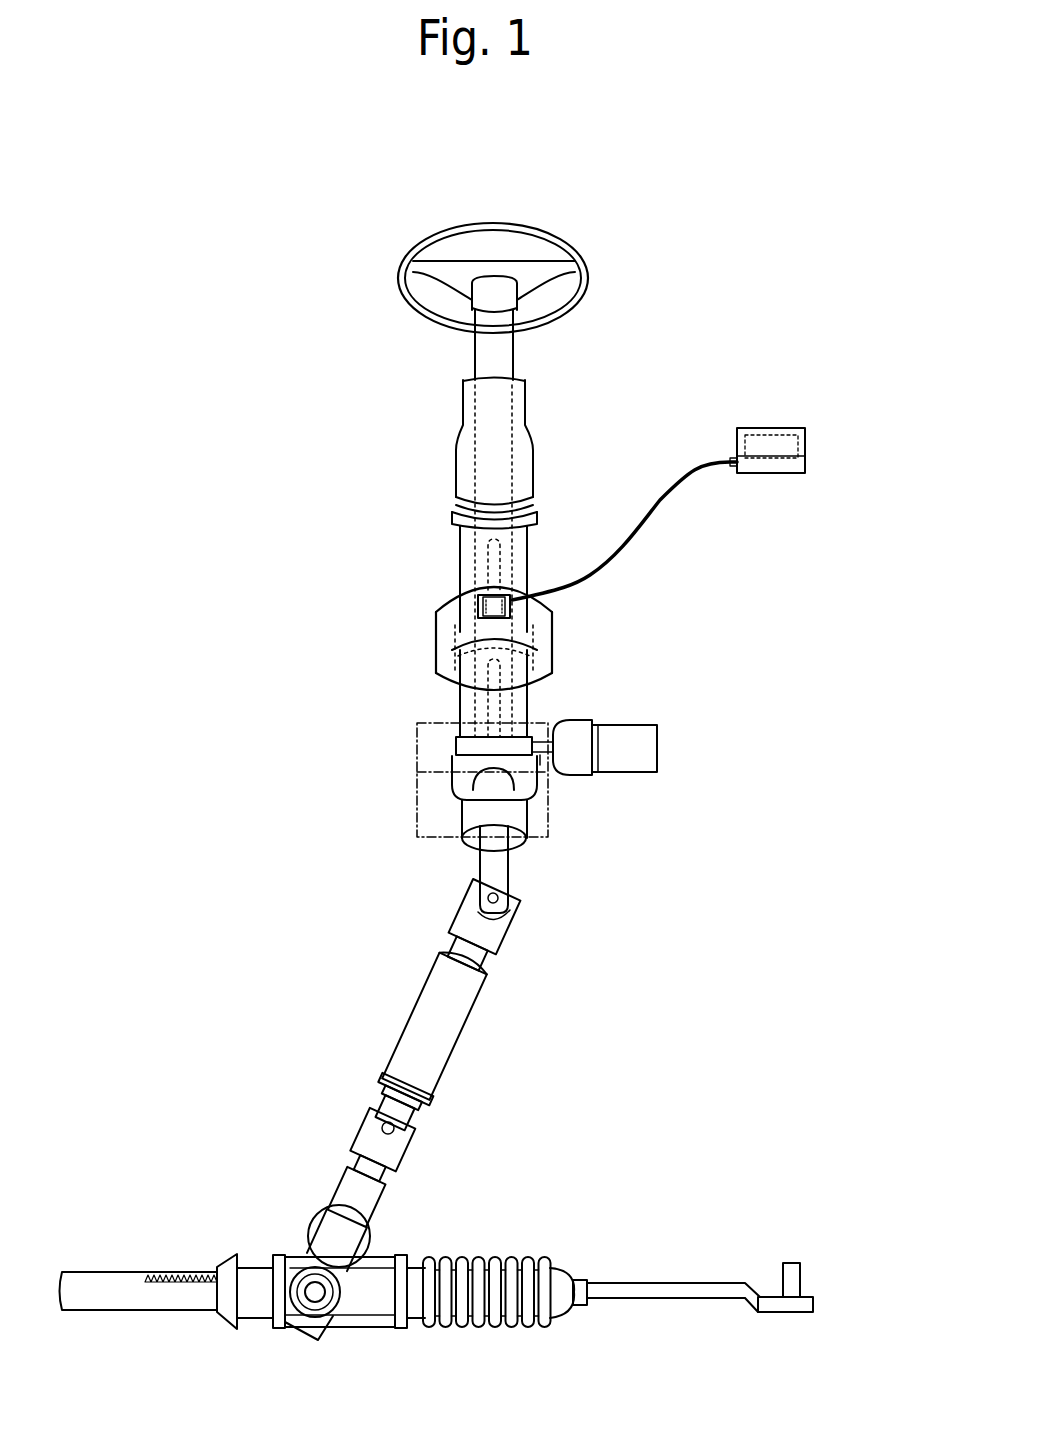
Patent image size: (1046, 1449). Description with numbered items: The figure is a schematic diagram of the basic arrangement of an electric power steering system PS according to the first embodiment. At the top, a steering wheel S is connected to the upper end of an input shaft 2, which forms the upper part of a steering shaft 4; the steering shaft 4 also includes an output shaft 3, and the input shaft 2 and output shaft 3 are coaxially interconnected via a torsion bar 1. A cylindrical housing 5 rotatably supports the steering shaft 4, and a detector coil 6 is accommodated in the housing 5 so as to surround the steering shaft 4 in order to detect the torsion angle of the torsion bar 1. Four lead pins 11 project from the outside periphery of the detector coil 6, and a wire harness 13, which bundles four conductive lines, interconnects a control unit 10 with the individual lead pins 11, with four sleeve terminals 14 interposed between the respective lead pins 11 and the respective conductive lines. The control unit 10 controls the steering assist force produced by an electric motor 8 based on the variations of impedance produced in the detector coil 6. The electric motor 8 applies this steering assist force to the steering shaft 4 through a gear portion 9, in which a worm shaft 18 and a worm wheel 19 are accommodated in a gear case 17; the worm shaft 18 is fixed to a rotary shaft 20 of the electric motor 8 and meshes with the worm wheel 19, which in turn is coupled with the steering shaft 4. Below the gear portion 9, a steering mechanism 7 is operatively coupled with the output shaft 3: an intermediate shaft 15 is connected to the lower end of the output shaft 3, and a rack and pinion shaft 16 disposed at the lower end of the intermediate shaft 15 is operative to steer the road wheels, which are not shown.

The electric power steering system PS is at (607, 200).
The steering wheel S is at (598, 272).
The torsion bar 1 is at (460, 557).
The input shaft 2 is at (474, 350).
The output shaft 3 is at (485, 885).
The steering shaft 4 is at (473, 378).
The cylindrical housing 5 is at (460, 712).
The detector coil 6 is at (555, 612).
The steering mechanism 7 is at (352, 1130).
The electric motor 8 is at (660, 746).
The gear portion 9 is at (335, 708).
The control unit 10 is at (775, 425).
The lead pins 11 is at (477, 604).
The wire harness 13 is at (645, 512).
The sleeve terminals 14 is at (494, 606).
The intermediate shaft 15 is at (410, 1018).
The rack and pinion shaft 16 is at (118, 1268).
The gear case 17 is at (417, 822).
The worm shaft 18 is at (454, 748).
The worm wheel 19 is at (453, 793).
The rotary shaft 20 is at (545, 760).